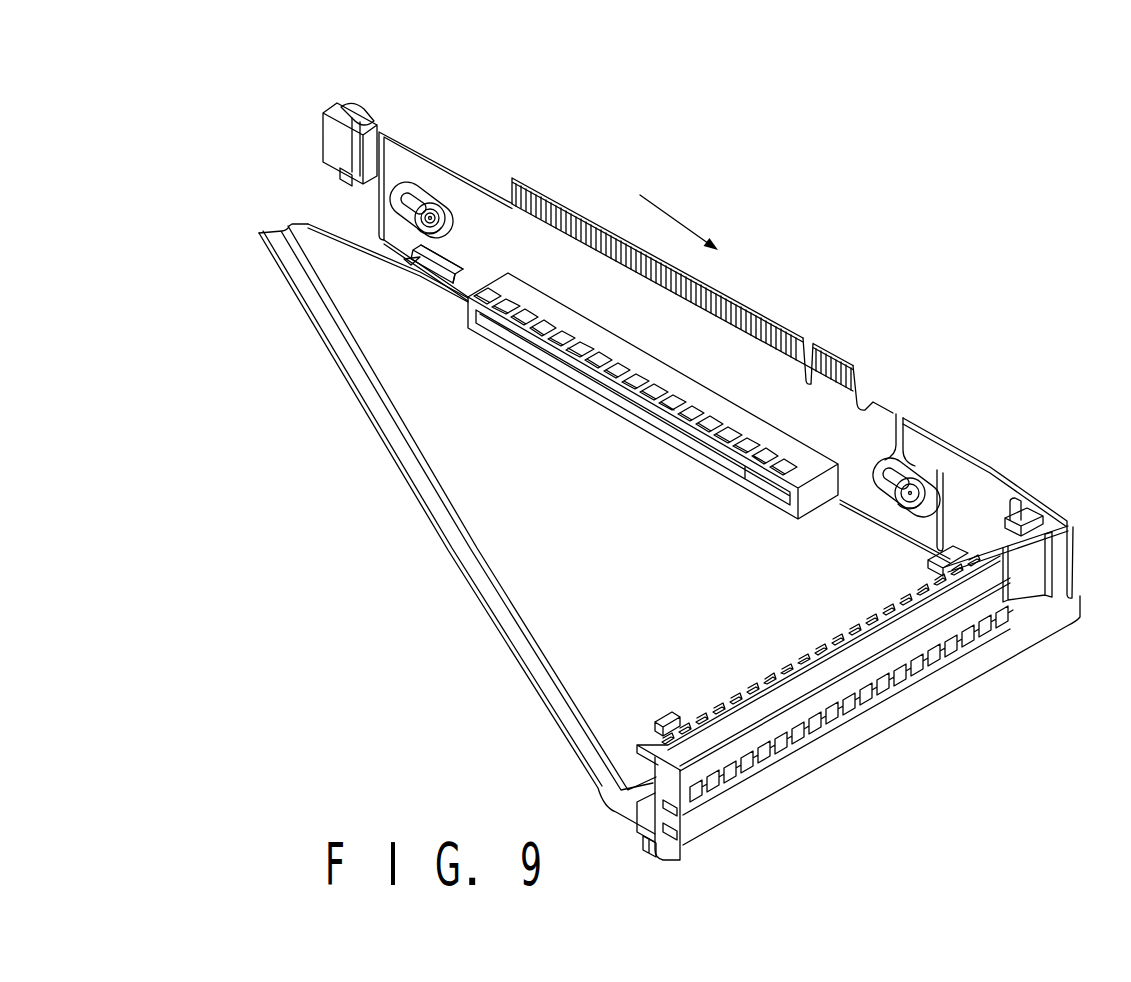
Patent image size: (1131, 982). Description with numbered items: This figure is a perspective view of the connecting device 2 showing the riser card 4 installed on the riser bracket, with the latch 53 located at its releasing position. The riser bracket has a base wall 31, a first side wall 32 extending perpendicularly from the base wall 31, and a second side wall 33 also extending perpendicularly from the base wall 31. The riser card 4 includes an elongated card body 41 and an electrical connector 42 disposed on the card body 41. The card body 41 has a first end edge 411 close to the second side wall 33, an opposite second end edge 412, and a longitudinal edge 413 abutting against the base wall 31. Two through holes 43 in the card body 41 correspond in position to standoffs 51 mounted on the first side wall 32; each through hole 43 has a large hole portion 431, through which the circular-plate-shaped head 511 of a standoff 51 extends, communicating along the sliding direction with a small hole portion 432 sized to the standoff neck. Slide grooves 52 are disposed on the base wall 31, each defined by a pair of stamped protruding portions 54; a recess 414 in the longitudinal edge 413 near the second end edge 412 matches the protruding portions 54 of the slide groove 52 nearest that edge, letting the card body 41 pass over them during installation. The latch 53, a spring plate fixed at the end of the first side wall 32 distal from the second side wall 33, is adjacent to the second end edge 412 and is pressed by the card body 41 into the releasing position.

The connecting device 2 is at (324, 78).
The riser card 4 is at (584, 208).
The card body 41 is at (729, 344).
The first end edge 411 is at (941, 486).
The second end edge 412 is at (345, 170).
The longitudinal edge 413 is at (893, 527).
The recess 414 is at (427, 258).
The electrical connector 42 is at (822, 494).
The through hole 43 is at (879, 462).
The large hole portion 431 is at (432, 214).
The small hole portion 432 is at (404, 196).
The standoff 51 is at (912, 492).
The head 511 is at (430, 218).
The slide groove 52 is at (458, 270).
The latch 53 is at (343, 102).
The protruding portion 54 is at (417, 266).
The base wall 31 is at (503, 555).
The first side wall 32 is at (985, 505).
The second side wall 33 is at (1027, 578).